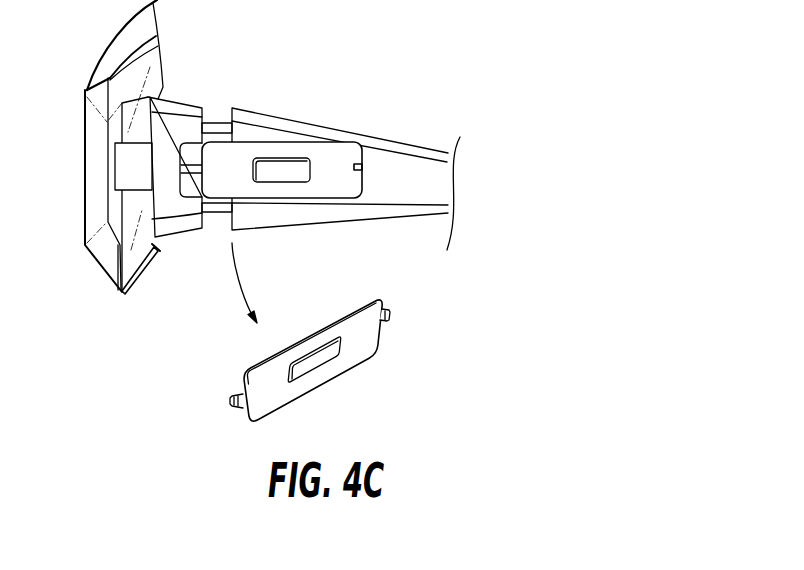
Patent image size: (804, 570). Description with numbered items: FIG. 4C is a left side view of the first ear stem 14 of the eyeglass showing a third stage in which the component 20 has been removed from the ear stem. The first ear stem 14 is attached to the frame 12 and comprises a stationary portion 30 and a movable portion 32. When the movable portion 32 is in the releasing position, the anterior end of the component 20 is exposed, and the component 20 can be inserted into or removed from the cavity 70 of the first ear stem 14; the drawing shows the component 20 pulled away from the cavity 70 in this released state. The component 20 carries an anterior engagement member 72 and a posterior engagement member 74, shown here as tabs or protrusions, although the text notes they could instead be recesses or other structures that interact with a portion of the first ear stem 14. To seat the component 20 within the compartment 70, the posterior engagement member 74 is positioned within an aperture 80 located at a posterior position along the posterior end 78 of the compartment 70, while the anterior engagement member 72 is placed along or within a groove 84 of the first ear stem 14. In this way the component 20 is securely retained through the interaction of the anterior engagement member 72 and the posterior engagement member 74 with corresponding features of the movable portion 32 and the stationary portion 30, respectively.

The frame 12 is at (117, 47).
The first ear stem 14 is at (418, 95).
The component 20 is at (357, 351).
The stationary portion 30 is at (370, 215).
The movable portion 32 is at (157, 239).
The cavity 70 is at (280, 150).
The anterior engagement member 72 is at (229, 399).
The posterior engagement member 74 is at (390, 321).
The posterior end 78 is at (357, 180).
The aperture 80 is at (355, 164).
The groove 84 is at (191, 168).